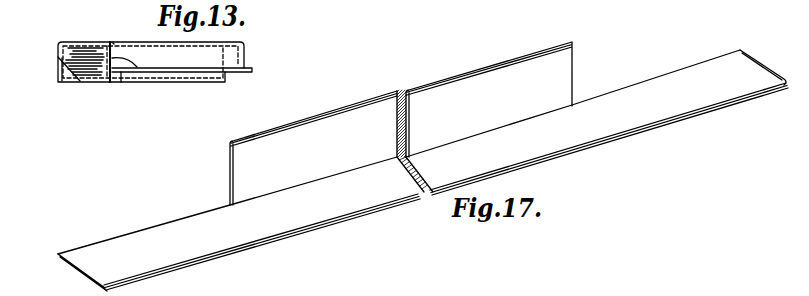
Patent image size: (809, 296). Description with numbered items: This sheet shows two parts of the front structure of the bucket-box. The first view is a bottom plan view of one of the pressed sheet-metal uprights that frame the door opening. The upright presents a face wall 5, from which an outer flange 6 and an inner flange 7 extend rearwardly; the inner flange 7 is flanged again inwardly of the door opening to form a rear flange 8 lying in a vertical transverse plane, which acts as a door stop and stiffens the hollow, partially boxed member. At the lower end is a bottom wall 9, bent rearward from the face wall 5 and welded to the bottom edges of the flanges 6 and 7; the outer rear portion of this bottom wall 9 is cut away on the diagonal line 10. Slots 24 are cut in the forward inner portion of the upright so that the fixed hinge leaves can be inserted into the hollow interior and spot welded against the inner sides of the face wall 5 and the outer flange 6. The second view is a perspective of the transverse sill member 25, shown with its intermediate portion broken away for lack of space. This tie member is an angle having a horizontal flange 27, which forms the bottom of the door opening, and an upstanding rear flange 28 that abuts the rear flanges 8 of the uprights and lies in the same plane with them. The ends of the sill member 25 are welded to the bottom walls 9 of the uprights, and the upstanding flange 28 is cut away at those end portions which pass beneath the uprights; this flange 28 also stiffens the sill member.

In FIG. 13, the face wall 5 is at (82, 43).
In FIG. 13, the slots 24 is at (107, 42).
In FIG. 13, the outer flange 6 is at (57, 63).
In FIG. 13, the diagonal line 10 is at (66, 84).
In FIG. 13, the bottom wall 9 is at (87, 68).
In FIG. 13, the rear flange 8 is at (120, 84).
In FIG. 13, the inner flange 7 is at (137, 67).
In FIG. 17, the transverse sill member 25 is at (312, 216).
In FIG. 17, the horizontal flange 27 is at (617, 157).
In FIG. 17, the upstanding rear flange 28 is at (560, 72).